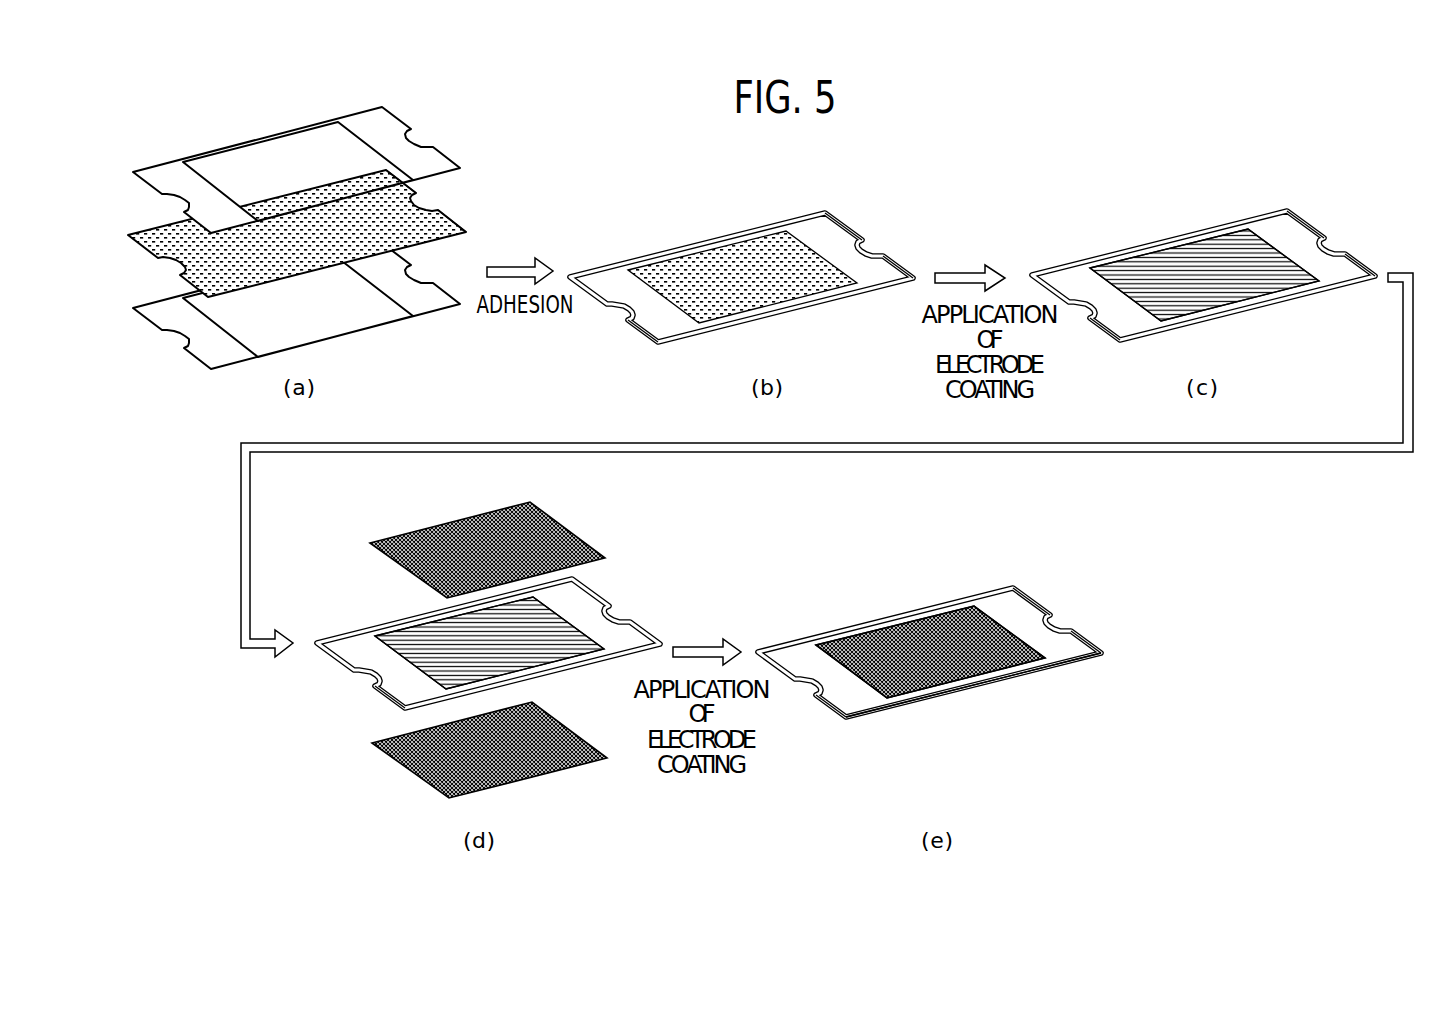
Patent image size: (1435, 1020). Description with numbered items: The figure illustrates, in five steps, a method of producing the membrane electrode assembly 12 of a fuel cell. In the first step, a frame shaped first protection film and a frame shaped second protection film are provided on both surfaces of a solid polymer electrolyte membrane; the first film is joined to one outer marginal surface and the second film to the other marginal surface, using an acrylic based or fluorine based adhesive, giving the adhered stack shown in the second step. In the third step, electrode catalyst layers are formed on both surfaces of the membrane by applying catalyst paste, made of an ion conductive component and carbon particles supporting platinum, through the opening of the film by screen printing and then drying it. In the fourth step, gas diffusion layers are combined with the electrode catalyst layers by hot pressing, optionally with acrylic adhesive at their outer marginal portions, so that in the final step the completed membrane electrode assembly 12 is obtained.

The membrane electrode assembly 12 is at (941, 646).